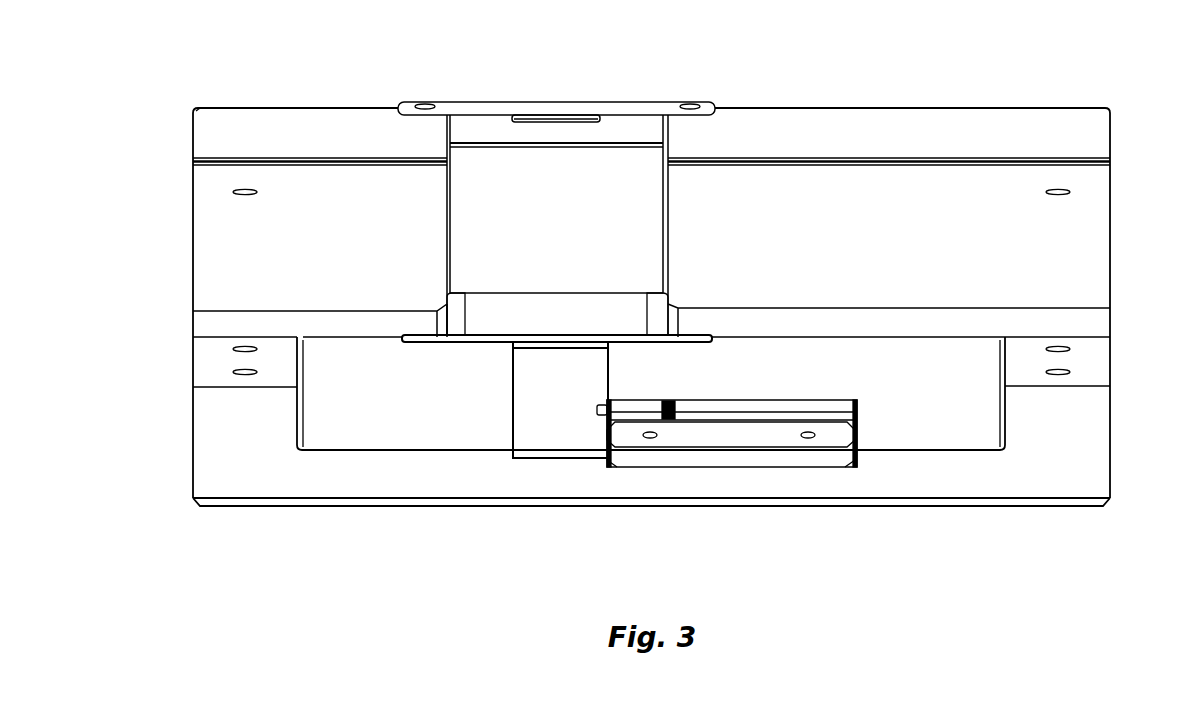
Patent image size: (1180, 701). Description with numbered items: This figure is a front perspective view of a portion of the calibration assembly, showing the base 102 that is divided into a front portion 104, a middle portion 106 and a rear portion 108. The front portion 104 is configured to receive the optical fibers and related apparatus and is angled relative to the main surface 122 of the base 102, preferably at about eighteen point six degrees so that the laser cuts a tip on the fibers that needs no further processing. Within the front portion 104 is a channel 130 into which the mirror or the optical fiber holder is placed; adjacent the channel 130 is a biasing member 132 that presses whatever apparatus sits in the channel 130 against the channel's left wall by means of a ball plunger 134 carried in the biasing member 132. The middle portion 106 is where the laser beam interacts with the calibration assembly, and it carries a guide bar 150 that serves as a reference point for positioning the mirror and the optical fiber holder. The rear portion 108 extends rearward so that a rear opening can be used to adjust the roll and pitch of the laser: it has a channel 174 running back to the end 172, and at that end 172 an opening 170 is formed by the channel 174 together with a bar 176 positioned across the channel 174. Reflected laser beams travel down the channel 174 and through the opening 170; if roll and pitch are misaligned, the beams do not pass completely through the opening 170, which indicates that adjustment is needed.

The base 102 is at (1087, 262).
The front portion 104 is at (357, 470).
The middle portion 106 is at (137, 315).
The rear portion 108 is at (137, 110).
The main surface 122 is at (207, 363).
The channel 130 is at (555, 437).
The biasing member 132 is at (767, 452).
The ball plunger 134 is at (603, 416).
The guide bar 150 is at (688, 336).
The opening 170 is at (567, 112).
The end 172 is at (865, 107).
The channel 174 is at (551, 223).
The bar 176 is at (445, 100).